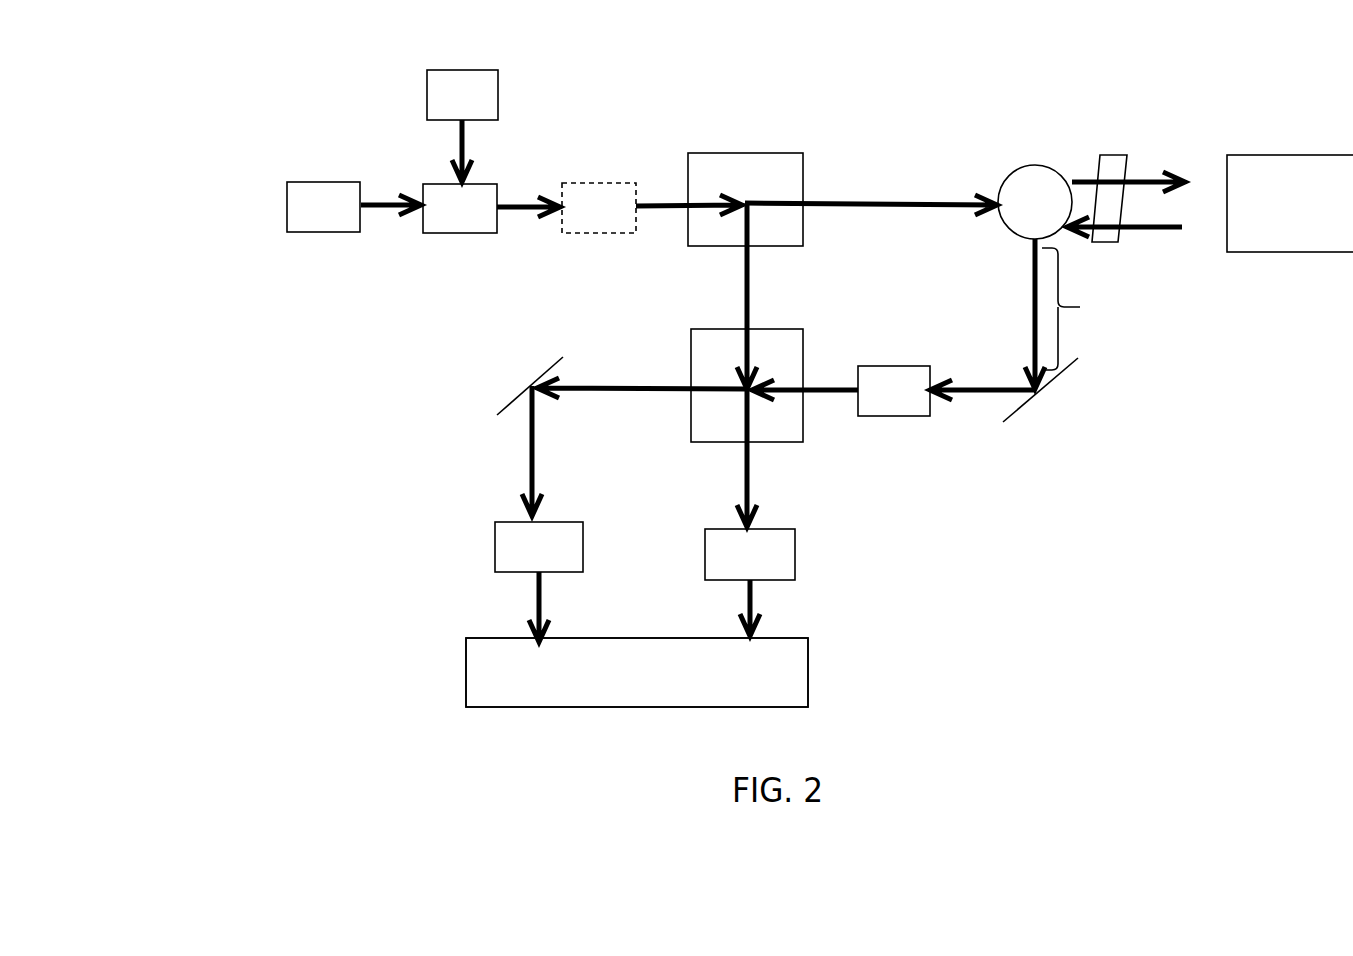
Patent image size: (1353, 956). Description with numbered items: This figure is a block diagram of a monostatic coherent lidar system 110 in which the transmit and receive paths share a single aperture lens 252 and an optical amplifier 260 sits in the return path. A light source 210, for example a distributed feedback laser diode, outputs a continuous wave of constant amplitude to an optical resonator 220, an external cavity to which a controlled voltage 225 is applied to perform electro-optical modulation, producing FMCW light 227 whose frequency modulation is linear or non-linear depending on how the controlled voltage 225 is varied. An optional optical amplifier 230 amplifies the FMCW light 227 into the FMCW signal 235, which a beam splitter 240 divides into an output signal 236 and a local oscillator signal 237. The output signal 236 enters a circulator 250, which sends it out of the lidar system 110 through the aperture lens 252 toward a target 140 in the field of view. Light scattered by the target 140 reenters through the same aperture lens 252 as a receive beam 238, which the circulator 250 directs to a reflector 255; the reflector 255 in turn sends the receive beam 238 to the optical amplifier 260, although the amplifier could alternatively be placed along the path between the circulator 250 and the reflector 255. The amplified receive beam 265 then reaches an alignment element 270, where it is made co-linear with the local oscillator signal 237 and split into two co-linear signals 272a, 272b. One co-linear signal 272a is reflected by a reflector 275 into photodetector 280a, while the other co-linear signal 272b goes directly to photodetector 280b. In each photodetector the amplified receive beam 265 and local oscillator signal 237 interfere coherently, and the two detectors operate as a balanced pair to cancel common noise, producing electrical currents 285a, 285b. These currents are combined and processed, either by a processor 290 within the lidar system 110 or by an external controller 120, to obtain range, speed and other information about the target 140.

The lidar system 110 is at (206, 144).
The controller 120 is at (637, 672).
The target 140 is at (1290, 203).
The light source 210 is at (323, 207).
The optical resonator 220 is at (429, 208).
The controlled voltage 225 is at (462, 126).
The FMCW light 227 is at (525, 212).
The optical amplifier 230 is at (599, 208).
The FMCW signal 235 is at (663, 203).
The output signal 236 is at (852, 203).
The local oscillator signal 237 is at (747, 289).
The receive beam 238 is at (1148, 228).
The beam splitter 240 is at (775, 152).
The circulator 250 is at (1023, 167).
The aperture lens 252 is at (1095, 157).
The reflector 255 is at (1068, 367).
The optical amplifier 260 is at (894, 391).
The amplified receive beam 265 is at (823, 393).
The alignment element 270 is at (692, 350).
The co-linear signal 272a is at (602, 390).
The co-linear signal 272b is at (748, 467).
The reflector 275 is at (500, 398).
The photodetector 280a is at (539, 547).
The photodetector 280b is at (750, 554).
The electrical current 285a is at (537, 598).
The electrical current 285b is at (753, 600).
The processor 290 is at (637, 672).